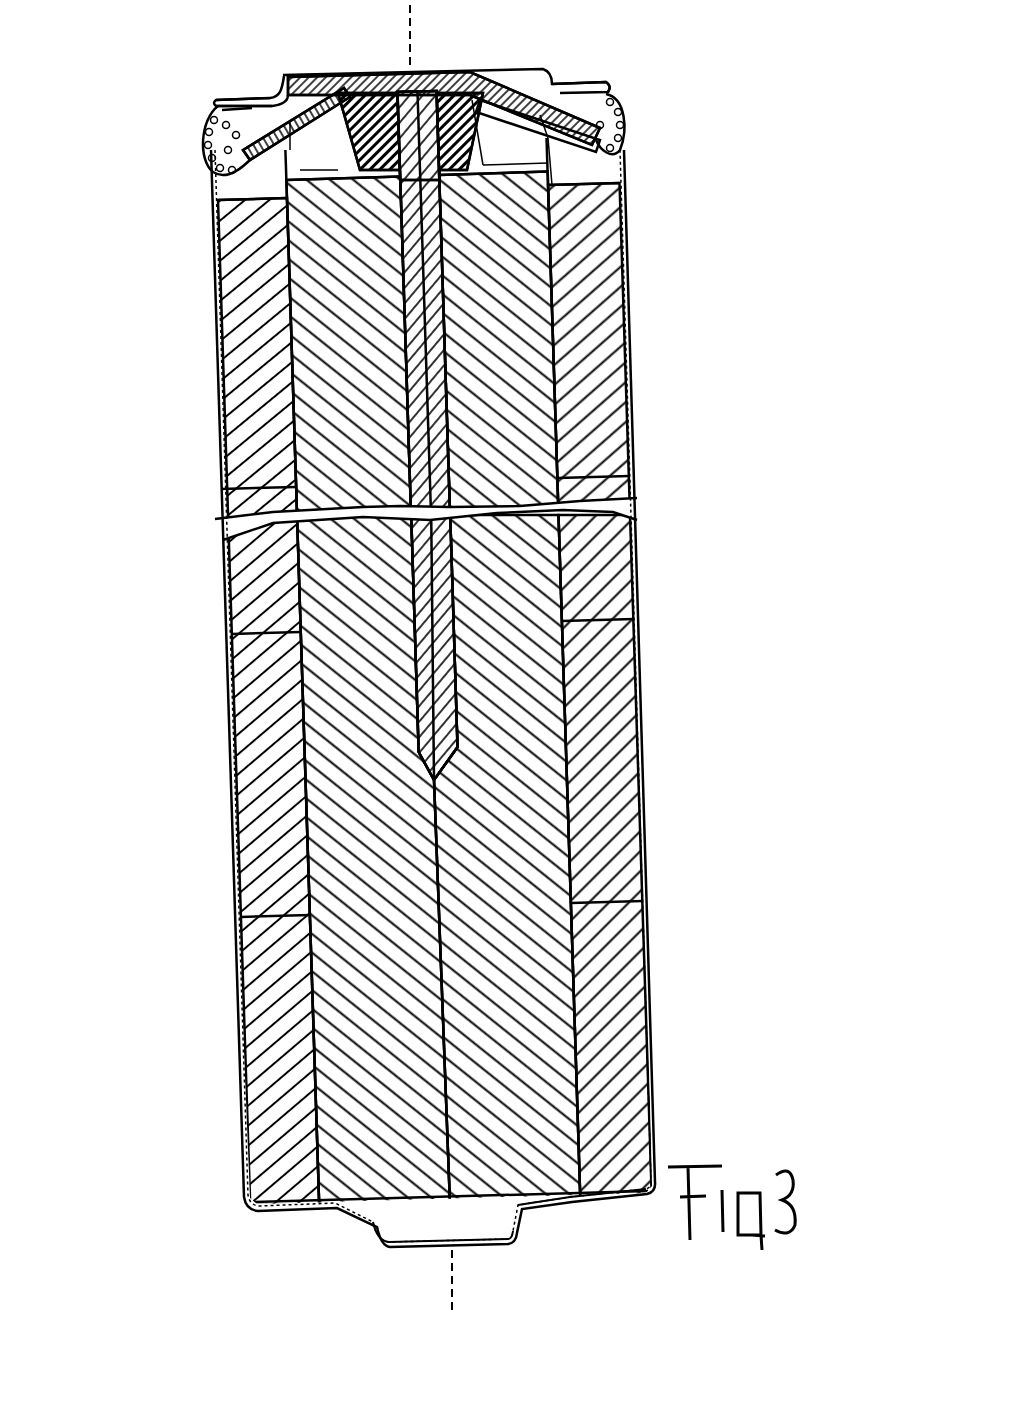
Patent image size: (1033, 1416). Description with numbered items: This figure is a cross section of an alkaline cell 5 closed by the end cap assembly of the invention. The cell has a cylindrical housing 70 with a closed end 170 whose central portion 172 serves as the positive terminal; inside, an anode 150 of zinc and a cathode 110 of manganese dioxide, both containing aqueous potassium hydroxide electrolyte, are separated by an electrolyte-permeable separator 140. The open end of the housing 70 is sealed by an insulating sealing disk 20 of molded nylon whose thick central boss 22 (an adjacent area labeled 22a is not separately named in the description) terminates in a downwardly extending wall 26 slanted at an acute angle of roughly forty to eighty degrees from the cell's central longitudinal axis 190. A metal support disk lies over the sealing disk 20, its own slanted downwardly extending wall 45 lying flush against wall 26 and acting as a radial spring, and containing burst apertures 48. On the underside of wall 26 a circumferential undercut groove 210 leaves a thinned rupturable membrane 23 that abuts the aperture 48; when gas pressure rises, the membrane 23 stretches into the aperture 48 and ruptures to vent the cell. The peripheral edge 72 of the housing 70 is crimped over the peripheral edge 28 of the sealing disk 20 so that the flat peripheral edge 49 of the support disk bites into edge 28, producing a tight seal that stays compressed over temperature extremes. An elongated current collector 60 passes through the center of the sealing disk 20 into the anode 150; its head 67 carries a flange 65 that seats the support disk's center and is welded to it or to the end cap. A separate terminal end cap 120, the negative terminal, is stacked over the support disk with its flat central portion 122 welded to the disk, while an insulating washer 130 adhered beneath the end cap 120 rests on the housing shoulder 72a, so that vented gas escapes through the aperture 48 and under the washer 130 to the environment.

The cell 5 is at (120, 191).
The sealing disk 20 is at (360, 162).
The central boss 22 is at (475, 140).
The separator layer 22a is at (560, 140).
The rupturable membrane 23 is at (292, 118).
The downwardly extending wall 26 is at (310, 110).
The peripheral edge 28 is at (625, 88).
The downwardly extending wall 45 is at (543, 72).
The burst aperture 48 is at (268, 93).
The peripheral edge 49 is at (627, 115).
The current collector 60 is at (437, 288).
The flange 65 is at (460, 68).
The head 67 is at (423, 70).
The cylindrical housing 70 is at (640, 562).
The peripheral edge 72 is at (208, 133).
The housing shoulder 72a is at (212, 115).
The cathode 110 is at (247, 419).
The terminal end cap 120 is at (533, 63).
The flat central portion 122 is at (335, 74).
The insulating washer 130 is at (213, 100).
The separator 140 is at (337, 1217).
The anode 150 is at (532, 363).
The closed end 170 is at (563, 1210).
The central portion 172 is at (517, 1246).
The central longitudinal axis 190 is at (408, 30).
The undercut groove 210 is at (302, 123).